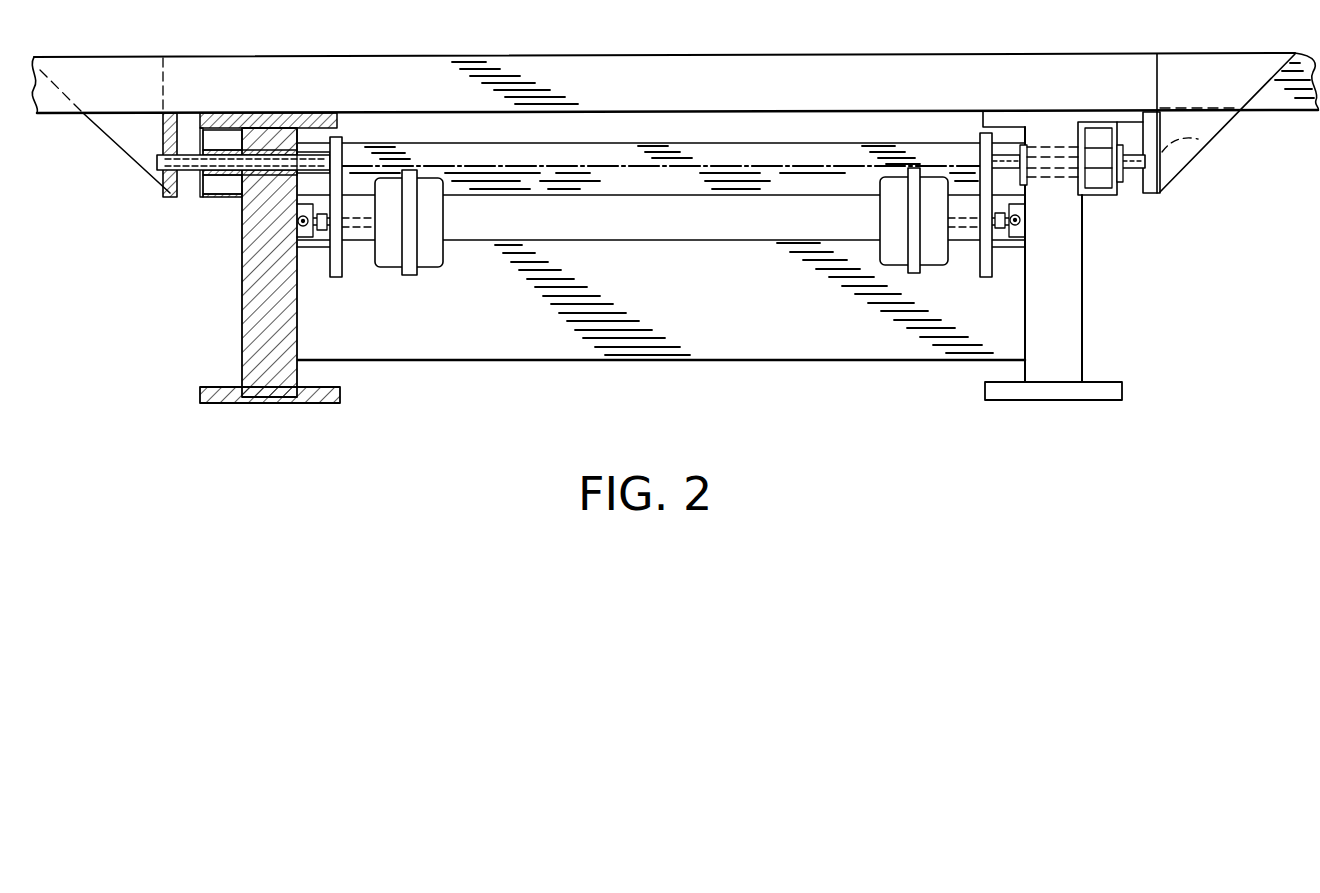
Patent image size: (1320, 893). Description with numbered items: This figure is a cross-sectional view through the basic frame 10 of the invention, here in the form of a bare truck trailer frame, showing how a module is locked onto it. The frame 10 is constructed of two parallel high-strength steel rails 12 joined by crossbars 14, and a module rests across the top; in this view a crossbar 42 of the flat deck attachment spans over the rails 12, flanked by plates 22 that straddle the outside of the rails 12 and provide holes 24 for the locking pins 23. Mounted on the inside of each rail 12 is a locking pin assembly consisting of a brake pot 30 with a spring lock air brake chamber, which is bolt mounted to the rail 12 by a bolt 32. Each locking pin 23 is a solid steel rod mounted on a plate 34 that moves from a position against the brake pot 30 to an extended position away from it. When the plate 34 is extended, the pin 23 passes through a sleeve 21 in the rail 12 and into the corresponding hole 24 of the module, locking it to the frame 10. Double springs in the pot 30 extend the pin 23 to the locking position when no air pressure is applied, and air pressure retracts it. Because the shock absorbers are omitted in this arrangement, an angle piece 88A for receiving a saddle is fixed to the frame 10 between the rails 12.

The frame 10 is at (164, 262).
The rails 12 is at (242, 303).
The crossbars 14 is at (771, 340).
The sleeves 21 is at (265, 147).
The plates 22 is at (170, 196).
The locking pins 23 is at (160, 161).
The holes 24 is at (165, 183).
The brake pot 30 is at (441, 270).
The bolt 32 is at (320, 243).
The plate 34 is at (347, 154).
The crossbars 42 is at (640, 63).
The angle piece 88A is at (594, 165).